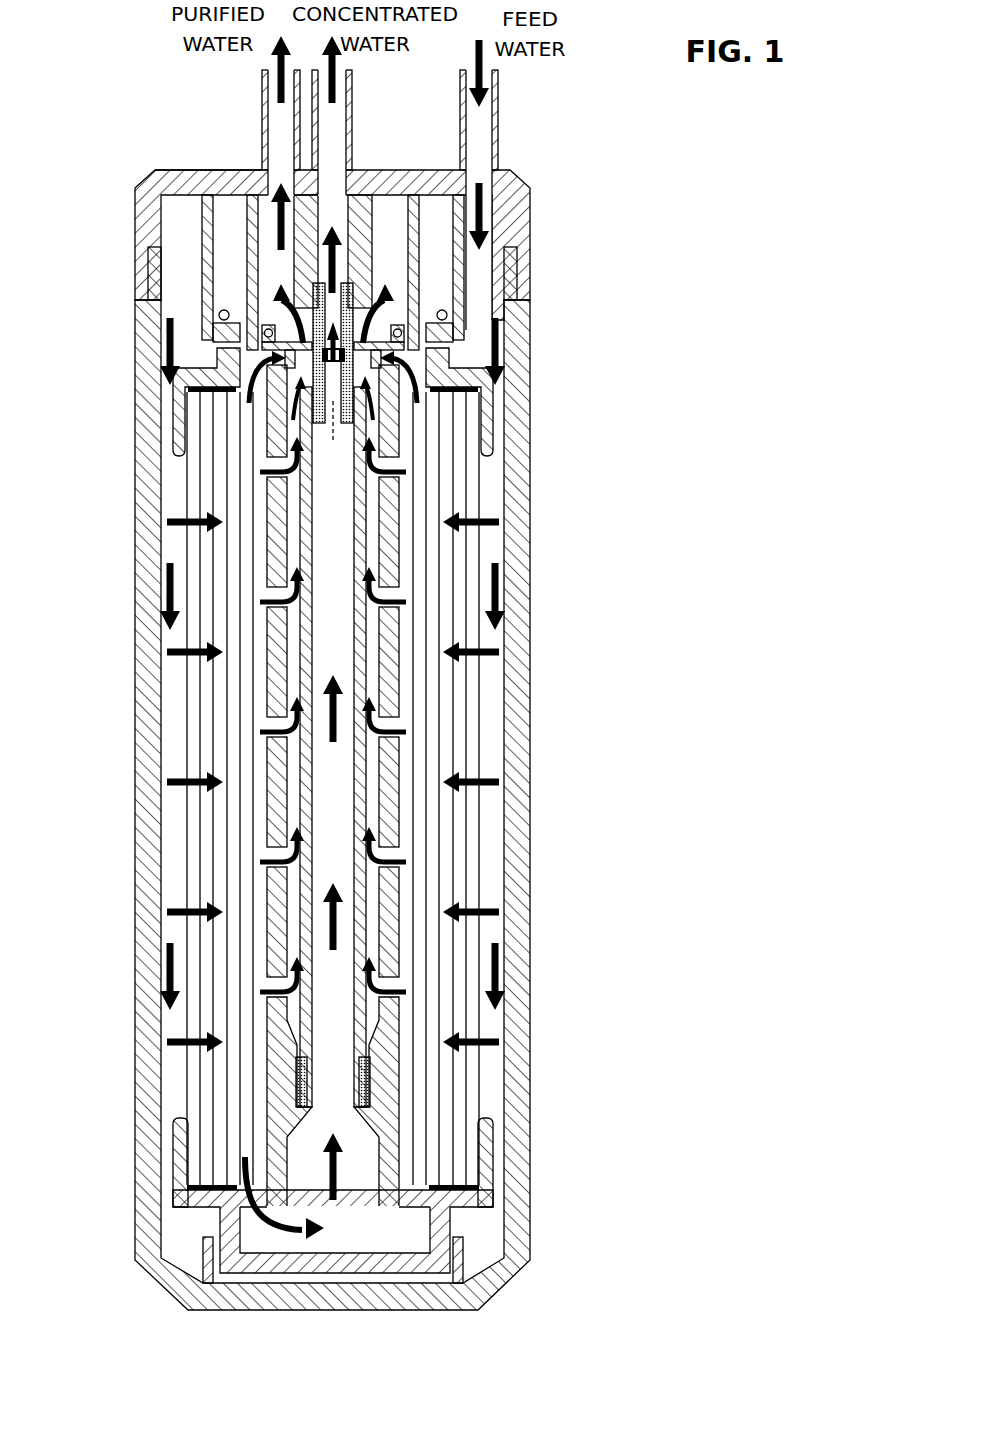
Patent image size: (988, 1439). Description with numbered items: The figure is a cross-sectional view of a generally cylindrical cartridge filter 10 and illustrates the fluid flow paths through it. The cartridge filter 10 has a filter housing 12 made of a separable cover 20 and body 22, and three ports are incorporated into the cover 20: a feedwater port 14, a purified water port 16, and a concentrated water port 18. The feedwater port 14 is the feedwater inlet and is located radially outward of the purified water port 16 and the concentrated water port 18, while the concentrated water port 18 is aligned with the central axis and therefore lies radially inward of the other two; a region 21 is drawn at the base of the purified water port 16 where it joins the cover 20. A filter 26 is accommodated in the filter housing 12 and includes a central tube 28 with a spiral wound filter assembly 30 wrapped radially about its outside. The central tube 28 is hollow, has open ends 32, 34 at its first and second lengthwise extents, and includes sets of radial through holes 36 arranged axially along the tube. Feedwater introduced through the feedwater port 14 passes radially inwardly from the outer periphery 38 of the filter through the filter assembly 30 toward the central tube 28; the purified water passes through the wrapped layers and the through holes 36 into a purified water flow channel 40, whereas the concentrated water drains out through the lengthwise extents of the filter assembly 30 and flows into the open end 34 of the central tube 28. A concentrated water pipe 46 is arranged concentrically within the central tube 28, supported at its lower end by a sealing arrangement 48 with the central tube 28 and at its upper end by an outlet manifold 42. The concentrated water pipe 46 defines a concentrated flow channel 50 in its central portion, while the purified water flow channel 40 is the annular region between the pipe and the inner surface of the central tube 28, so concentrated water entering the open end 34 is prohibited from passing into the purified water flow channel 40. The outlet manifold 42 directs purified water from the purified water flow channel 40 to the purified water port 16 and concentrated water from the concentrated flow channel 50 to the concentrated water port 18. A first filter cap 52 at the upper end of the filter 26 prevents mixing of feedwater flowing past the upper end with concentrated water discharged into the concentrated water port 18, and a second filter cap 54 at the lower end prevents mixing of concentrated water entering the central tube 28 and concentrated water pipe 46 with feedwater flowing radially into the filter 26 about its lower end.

The cartridge filter 10 is at (702, 790).
The filter housing 12 is at (530, 1182).
The feedwater port 14 is at (488, 125).
The purified water port 16 is at (280, 108).
The concentrated water port 18 is at (335, 131).
The cover 20 is at (523, 226).
The cap opening 21 is at (261, 163).
The body 22 is at (521, 353).
The filter 26 is at (495, 1092).
The central tube 28 is at (397, 678).
The spiral wound filter assembly 30 is at (450, 1012).
The open end 32 is at (283, 383).
The open end 34 is at (370, 1230).
The radial through holes 36 is at (400, 847).
The outer periphery 38 is at (493, 490).
The purified water flow channel 40 is at (297, 876).
The outlet manifold 42 is at (321, 441).
The concentrated water pipe 46 is at (313, 790).
The sealing arrangement 48 is at (300, 1091).
The concentrated flow channel 50 is at (327, 629).
The first filter cap 52 is at (493, 406).
The second filter cap 54 is at (477, 1207).